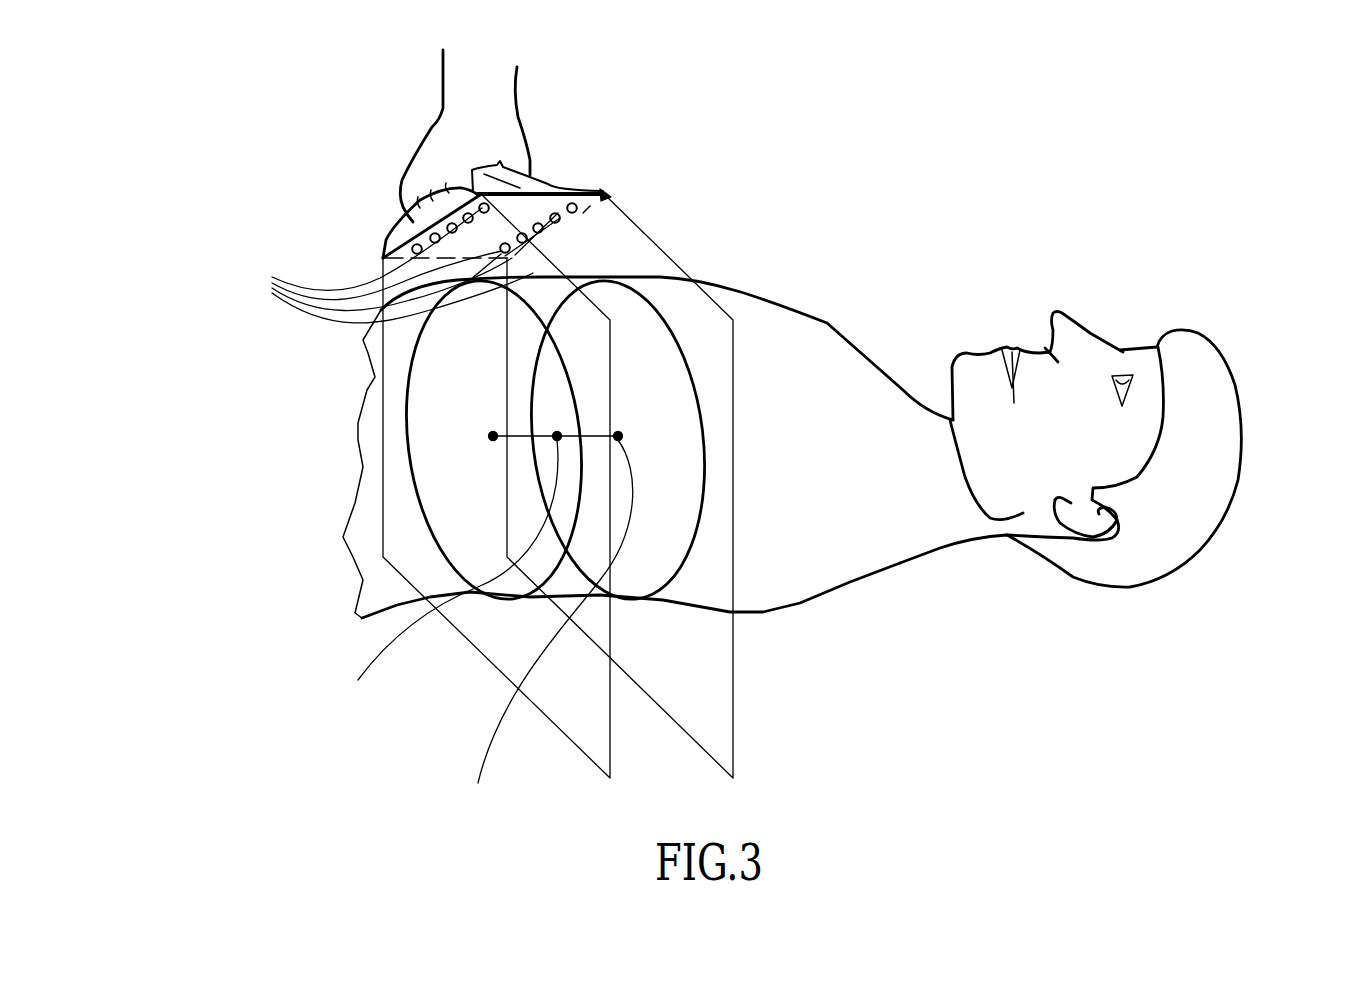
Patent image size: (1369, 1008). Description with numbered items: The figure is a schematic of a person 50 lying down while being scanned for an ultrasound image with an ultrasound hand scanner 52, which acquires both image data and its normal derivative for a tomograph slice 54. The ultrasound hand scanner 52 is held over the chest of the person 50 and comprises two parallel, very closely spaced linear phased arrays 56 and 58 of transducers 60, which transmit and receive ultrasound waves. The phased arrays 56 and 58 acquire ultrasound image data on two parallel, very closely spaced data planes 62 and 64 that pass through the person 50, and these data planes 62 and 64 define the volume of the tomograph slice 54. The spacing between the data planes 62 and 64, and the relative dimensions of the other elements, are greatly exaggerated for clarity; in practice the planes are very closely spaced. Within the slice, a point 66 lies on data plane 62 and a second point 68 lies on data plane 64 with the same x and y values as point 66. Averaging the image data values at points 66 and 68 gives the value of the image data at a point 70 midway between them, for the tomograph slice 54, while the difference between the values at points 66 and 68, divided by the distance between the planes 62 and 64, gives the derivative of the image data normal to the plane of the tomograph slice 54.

The person 50 is at (1214, 228).
The ultrasound hand scanner 52 is at (355, 176).
The tomograph slice 54 is at (570, 283).
The linear phased array 56 is at (410, 228).
The linear phased array 58 is at (585, 220).
The transducers 60 is at (383, 265).
The data plane 62 is at (610, 733).
The data plane 64 is at (733, 653).
The point 66 is at (490, 434).
The second point 68 is at (547, 632).
The point 70 is at (448, 578).